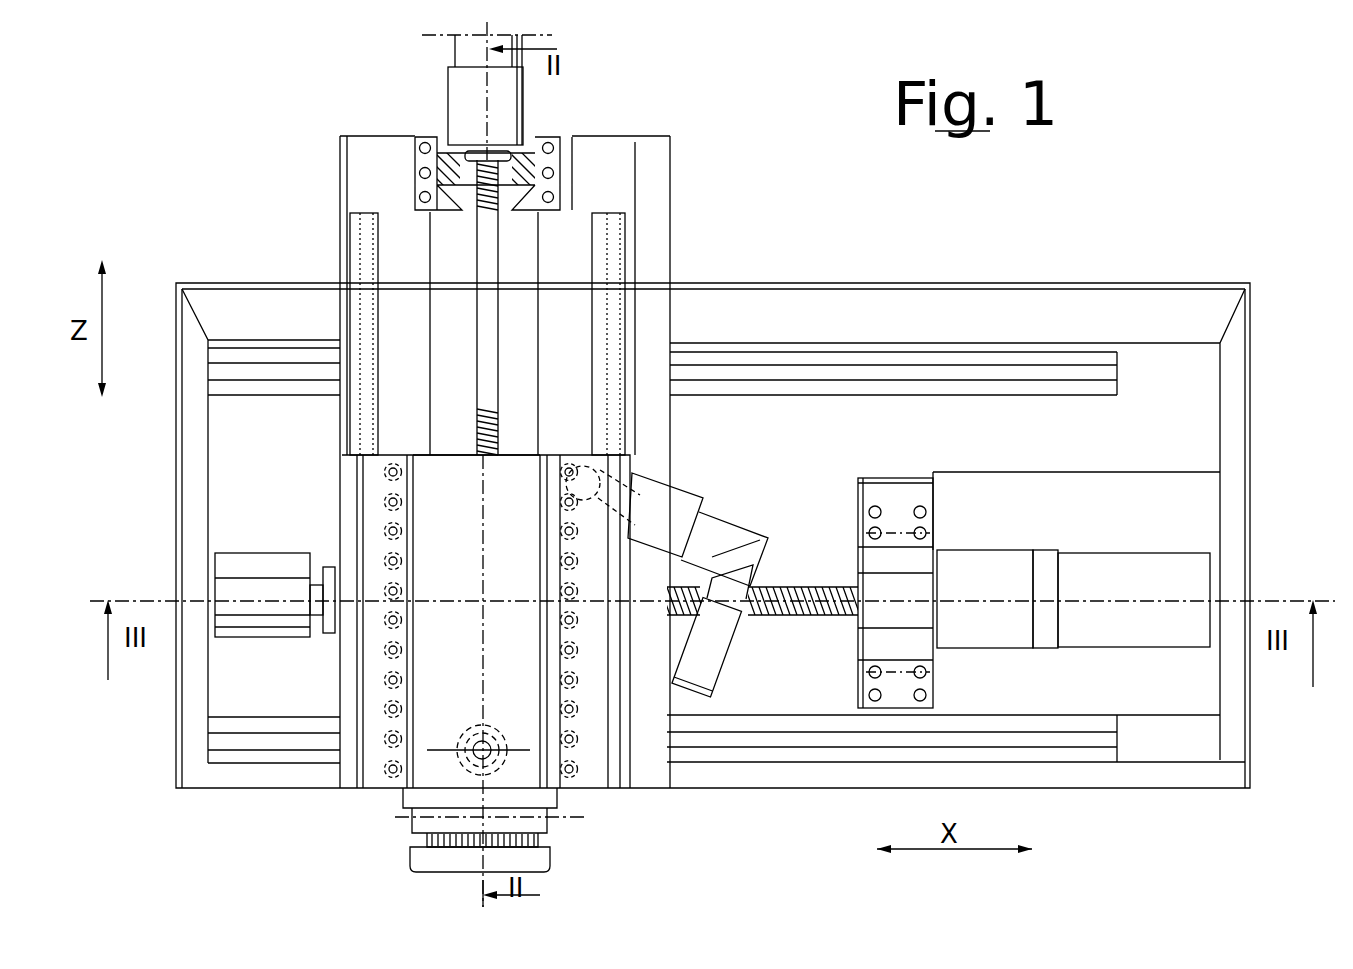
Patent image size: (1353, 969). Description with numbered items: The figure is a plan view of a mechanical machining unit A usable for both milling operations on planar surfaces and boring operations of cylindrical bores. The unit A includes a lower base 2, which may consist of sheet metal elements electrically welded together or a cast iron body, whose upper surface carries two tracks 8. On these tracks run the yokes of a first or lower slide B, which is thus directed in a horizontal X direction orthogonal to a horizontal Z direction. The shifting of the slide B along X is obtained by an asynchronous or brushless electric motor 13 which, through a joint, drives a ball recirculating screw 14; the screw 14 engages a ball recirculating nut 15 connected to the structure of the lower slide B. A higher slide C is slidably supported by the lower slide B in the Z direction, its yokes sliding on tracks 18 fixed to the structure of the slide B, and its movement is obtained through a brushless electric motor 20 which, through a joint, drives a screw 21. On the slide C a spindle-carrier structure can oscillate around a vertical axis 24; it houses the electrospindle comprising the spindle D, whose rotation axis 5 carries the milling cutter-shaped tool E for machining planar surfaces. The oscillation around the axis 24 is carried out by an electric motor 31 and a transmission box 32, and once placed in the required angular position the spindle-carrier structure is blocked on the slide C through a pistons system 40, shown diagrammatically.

The mechanical machining unit A is at (223, 218).
The lower base 2 is at (1138, 282).
The rotation axis 5 is at (477, 603).
The tracks 8 is at (803, 372).
The electric motor 13 is at (1107, 553).
The ball recirculating screw 14 is at (797, 575).
The ball recirculating nut 15 is at (328, 627).
The tracks 18 is at (363, 278).
The electric motor 20 is at (517, 103).
The screw 21 is at (490, 292).
The vertical axis 24 is at (465, 727).
The electric motor 31 is at (710, 655).
The transmission box 32 is at (720, 538).
The pistons system 40 is at (487, 632).
The first slide B is at (672, 228).
The higher slide C is at (330, 507).
The spindle D is at (413, 797).
The milling cutter-shaped tool E is at (537, 857).